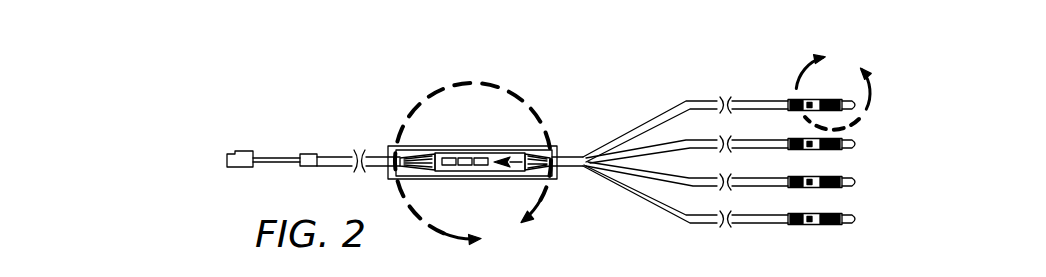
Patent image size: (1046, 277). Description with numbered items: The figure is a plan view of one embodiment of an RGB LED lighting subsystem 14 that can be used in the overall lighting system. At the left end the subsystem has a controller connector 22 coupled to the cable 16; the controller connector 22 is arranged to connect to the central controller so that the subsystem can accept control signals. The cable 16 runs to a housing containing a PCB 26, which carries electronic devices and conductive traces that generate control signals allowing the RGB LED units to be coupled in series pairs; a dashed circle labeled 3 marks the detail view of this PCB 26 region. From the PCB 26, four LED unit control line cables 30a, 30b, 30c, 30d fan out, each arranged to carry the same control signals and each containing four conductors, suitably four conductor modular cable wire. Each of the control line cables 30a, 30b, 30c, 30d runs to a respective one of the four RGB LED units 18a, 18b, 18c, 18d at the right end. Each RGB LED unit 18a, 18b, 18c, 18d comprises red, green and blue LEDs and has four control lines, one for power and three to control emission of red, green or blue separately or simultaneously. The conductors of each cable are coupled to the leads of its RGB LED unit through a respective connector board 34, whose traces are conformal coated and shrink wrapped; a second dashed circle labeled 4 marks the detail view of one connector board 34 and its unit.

The RGB LED lighting subsystem 14 is at (372, 73).
The controller connector 22 is at (237, 151).
The cable 16 is at (334, 156).
The PCB 26 is at (475, 150).
The detail view indicator FIG. 3 is at (473, 167).
The LED unit control line cable 30a is at (650, 115).
The LED unit control line cable 30b is at (762, 139).
The LED unit control line cable 30c is at (650, 177).
The LED unit control line cable 30d is at (760, 224).
The RGB LED unit 18a is at (857, 105).
The RGB LED unit 18b is at (857, 144).
The RGB LED unit 18c is at (857, 182).
The RGB LED unit 18d is at (857, 219).
The connector board 34 is at (808, 100).
The detail view indicator FIG. 4 is at (833, 87).